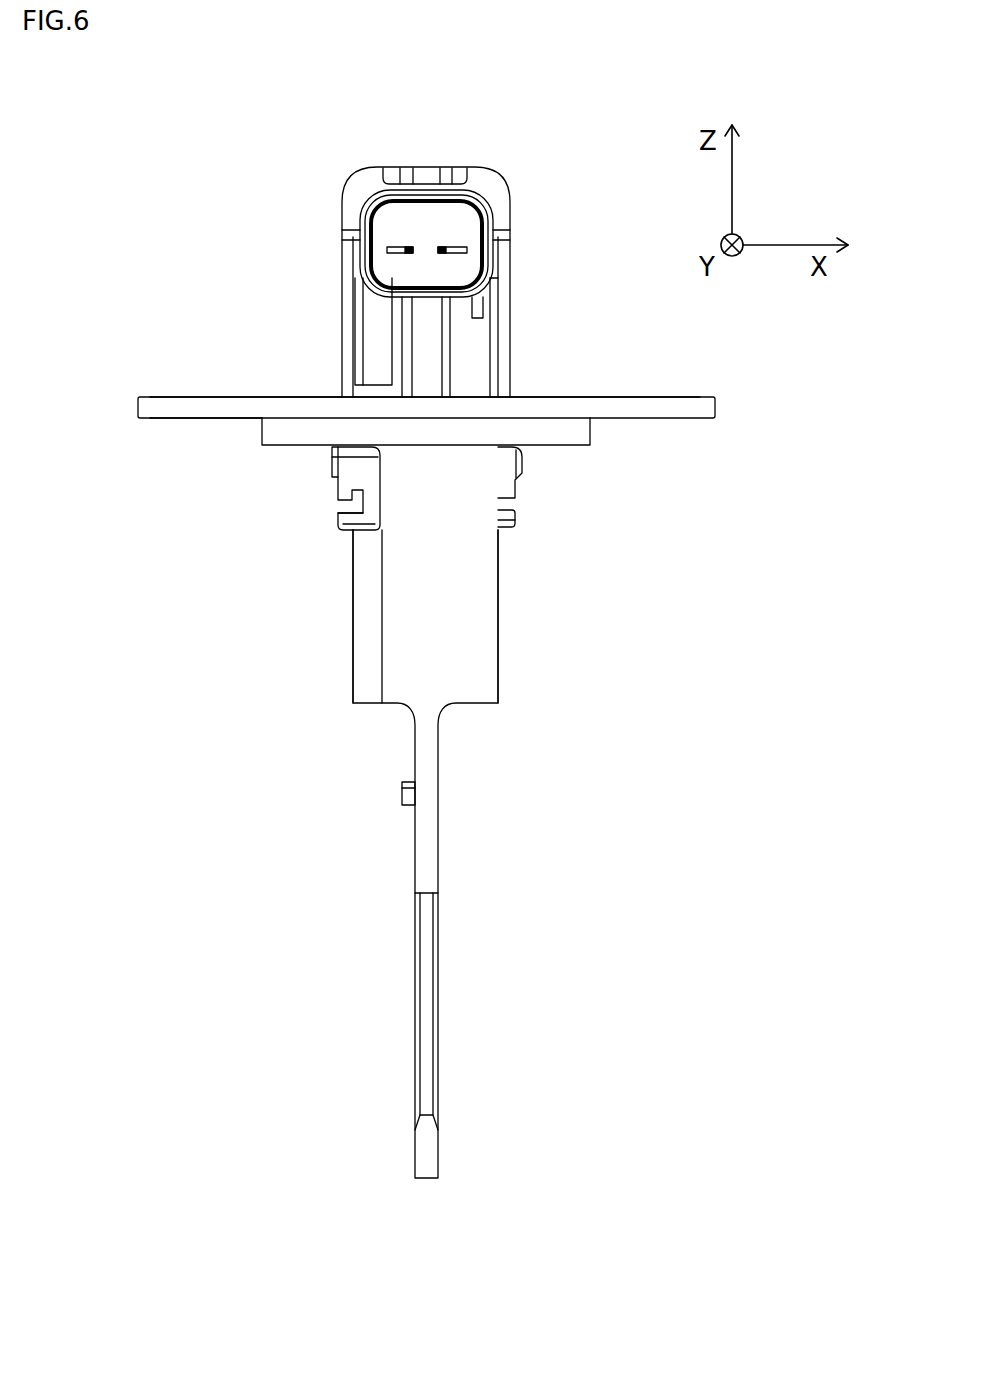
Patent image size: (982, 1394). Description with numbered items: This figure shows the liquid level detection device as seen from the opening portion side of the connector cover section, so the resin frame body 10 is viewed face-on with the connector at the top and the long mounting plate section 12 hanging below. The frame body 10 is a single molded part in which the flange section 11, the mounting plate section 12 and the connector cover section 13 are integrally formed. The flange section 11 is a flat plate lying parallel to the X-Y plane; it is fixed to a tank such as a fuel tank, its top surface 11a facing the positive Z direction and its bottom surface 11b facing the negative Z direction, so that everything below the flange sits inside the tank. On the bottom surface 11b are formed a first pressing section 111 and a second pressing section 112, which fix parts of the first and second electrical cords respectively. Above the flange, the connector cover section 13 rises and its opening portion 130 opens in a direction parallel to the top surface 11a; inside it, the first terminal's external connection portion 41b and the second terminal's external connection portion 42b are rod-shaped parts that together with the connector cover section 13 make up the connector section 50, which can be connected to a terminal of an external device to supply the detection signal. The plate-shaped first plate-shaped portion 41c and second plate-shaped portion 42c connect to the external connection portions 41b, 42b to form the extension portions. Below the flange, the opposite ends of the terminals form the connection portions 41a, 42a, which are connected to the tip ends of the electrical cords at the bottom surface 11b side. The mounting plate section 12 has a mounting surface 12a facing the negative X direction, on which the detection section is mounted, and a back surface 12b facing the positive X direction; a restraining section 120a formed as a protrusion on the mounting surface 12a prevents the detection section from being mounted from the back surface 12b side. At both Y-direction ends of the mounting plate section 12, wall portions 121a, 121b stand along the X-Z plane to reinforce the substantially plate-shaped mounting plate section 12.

The frame body 10 is at (540, 760).
The flange section 11 is at (155, 408).
The top surface 11a is at (173, 397).
The bottom surface 11b is at (170, 418).
The mounting plate section 12 is at (427, 1163).
The mounting surface 12a is at (415, 1130).
The back surface 12b is at (438, 1130).
The connector cover section 13 is at (415, 167).
The connector section 50 is at (512, 148).
The opening portion 130 is at (410, 213).
The connection portion 41a is at (338, 516).
The external connection portion 41b is at (410, 258).
The first plate-shaped portion 41c is at (387, 252).
The connection portion 42a is at (515, 517).
The external connection portion 42b is at (447, 258).
The second plate-shaped portion 42c is at (467, 252).
The first pressing section 111 is at (332, 475).
The second pressing section 112 is at (522, 468).
The restraining section 120a is at (402, 793).
The wall portion 121a is at (353, 630).
The wall portion 121b is at (498, 623).